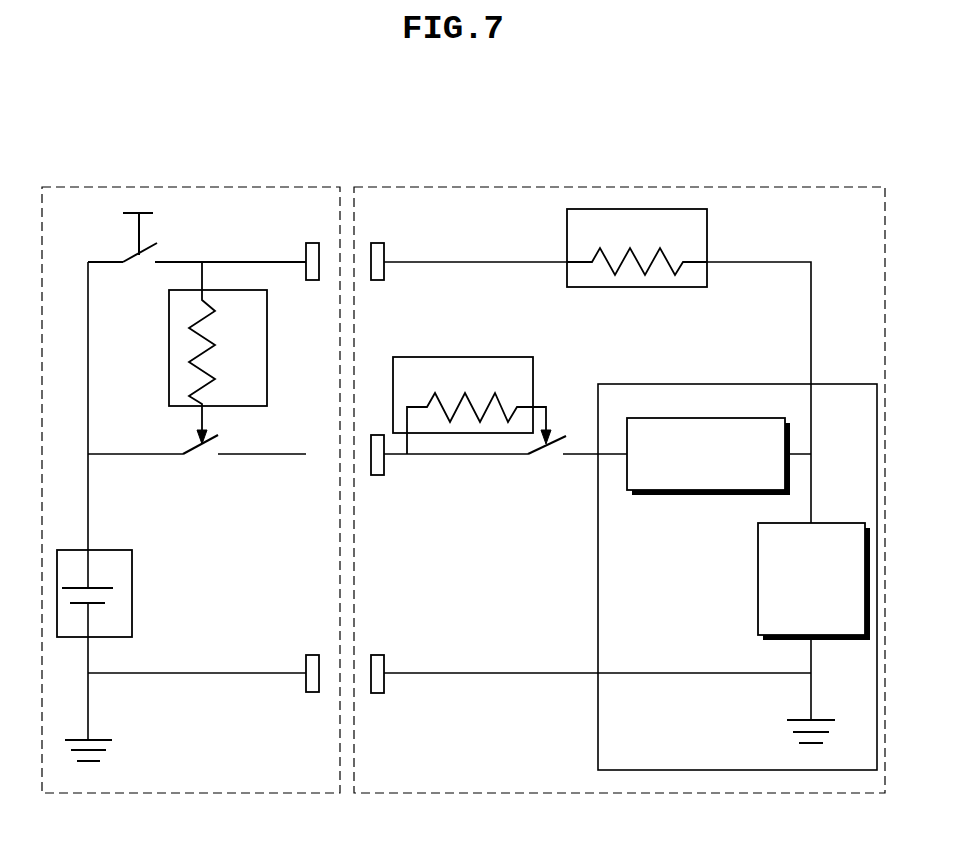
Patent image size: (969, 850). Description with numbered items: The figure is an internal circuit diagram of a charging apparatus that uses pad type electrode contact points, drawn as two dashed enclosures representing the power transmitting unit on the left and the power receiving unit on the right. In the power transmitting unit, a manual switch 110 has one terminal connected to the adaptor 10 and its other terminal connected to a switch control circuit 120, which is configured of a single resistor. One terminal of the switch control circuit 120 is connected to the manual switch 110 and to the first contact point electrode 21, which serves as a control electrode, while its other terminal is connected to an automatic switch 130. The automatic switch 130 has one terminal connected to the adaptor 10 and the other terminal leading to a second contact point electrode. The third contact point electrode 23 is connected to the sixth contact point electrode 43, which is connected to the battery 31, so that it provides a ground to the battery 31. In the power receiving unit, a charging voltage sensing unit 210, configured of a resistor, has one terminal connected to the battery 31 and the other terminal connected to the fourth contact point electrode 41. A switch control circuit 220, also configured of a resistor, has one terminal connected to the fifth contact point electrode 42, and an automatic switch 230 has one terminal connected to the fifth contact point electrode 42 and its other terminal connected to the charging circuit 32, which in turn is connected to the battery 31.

The adaptor 10 is at (133, 580).
The first contact point electrode 21 is at (313, 248).
The third contact point electrode 23 is at (313, 660).
The battery 31 is at (847, 523).
The charging circuit 32 is at (710, 496).
The fourth contact point electrode 41 is at (384, 247).
The fifth contact point electrode 42 is at (383, 468).
The sixth contact point electrode 43 is at (384, 662).
The manual switch 110 is at (133, 258).
The switch control circuit 120 is at (268, 320).
The automatic switch 130 is at (197, 458).
The charging voltage sensing unit 210 is at (622, 288).
The switch control circuit 220 is at (428, 356).
The automatic switch 230 is at (545, 450).